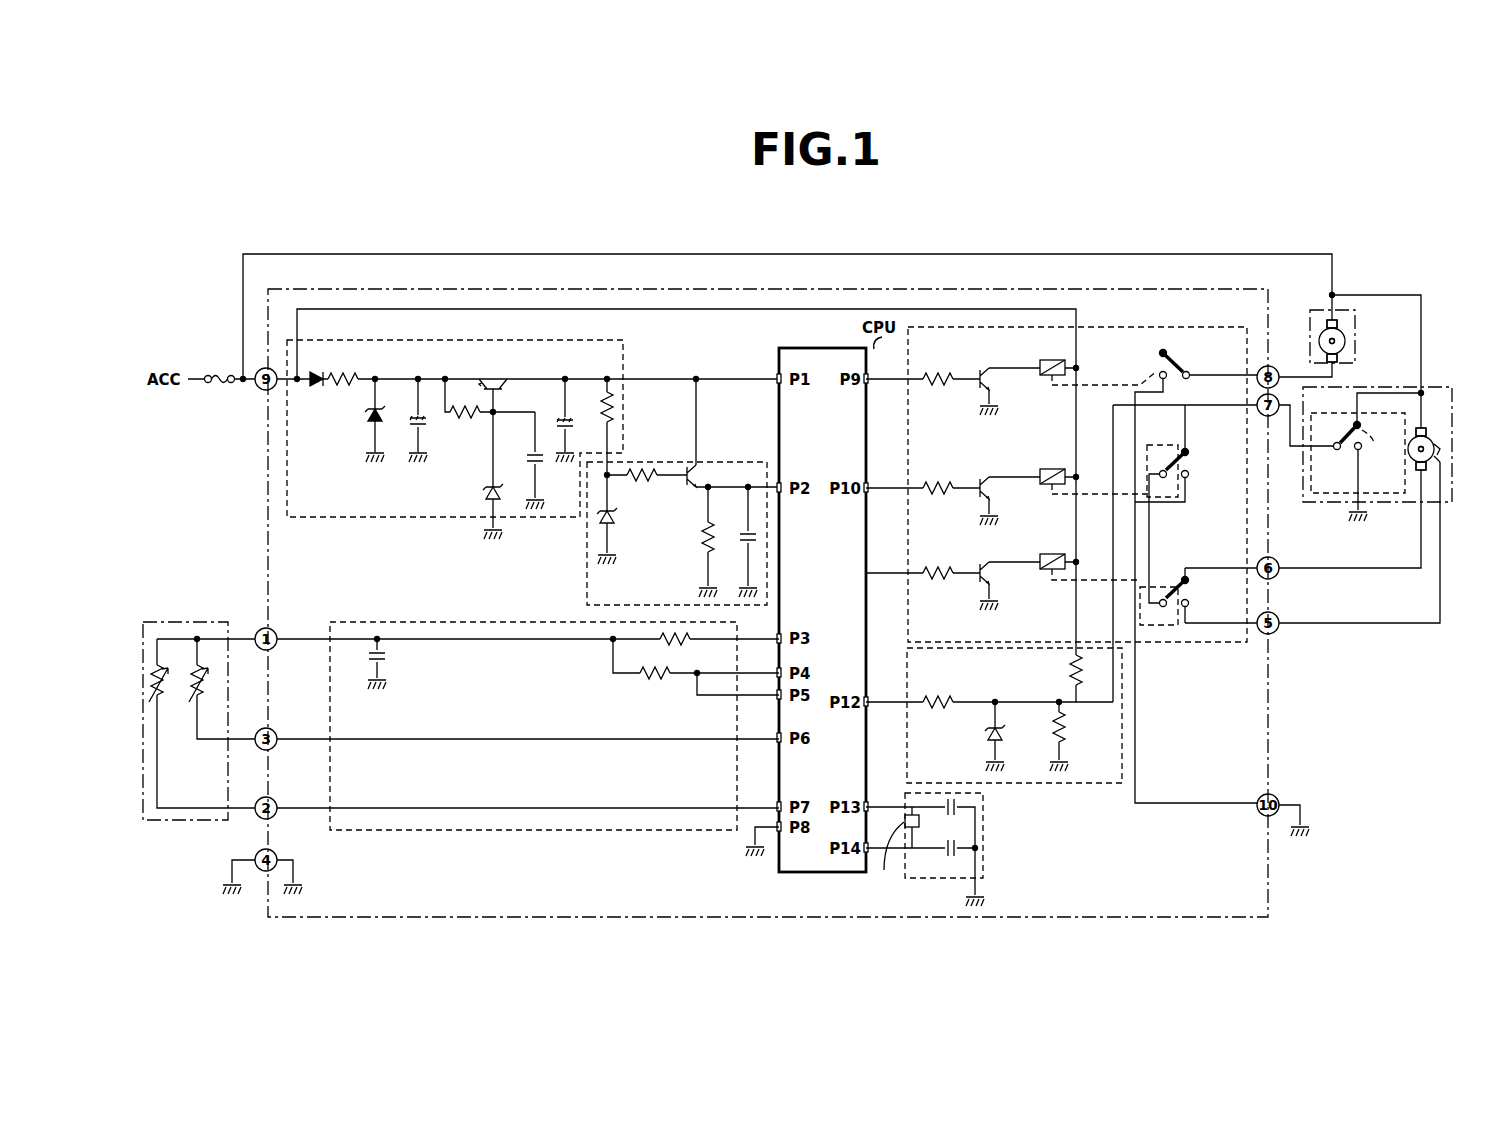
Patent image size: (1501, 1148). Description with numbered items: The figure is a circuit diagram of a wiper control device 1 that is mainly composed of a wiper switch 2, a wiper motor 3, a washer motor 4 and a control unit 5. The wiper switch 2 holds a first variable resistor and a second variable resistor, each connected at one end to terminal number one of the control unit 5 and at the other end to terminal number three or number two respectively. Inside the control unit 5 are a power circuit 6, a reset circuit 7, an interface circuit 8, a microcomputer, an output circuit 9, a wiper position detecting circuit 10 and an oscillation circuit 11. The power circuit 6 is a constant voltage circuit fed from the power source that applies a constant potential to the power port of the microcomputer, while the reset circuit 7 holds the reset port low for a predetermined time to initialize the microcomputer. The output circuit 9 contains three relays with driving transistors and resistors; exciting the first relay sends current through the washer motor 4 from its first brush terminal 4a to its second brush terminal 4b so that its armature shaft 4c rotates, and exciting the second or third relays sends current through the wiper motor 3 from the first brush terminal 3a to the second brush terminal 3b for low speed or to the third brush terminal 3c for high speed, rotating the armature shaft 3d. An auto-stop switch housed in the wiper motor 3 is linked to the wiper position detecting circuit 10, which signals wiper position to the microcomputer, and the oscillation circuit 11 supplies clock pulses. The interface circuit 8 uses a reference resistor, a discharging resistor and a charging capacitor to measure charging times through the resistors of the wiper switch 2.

The wiper control device 1 is at (955, 254).
The wiper switch 2 is at (188, 622).
The wiper motor 3 is at (1398, 476).
The first brush terminal 3a is at (1428, 436).
The second brush terminal 3b is at (1436, 466).
The third brush terminal 3c is at (1437, 456).
The armature shaft 3d is at (1424, 449).
The washer motor 4 is at (1351, 299).
The first brush terminal 4a is at (1337, 325).
The second brush terminal 4b is at (1338, 356).
The armature shaft 4c is at (1341, 341).
The control unit 5 is at (1083, 289).
The power circuit 6 is at (533, 340).
The reset circuit 7 is at (729, 462).
The interface circuit 8 is at (523, 622).
The output circuit 9 is at (1098, 327).
The wiper position detecting circuit 10 is at (1080, 783).
The oscillation circuit 11 is at (979, 848).